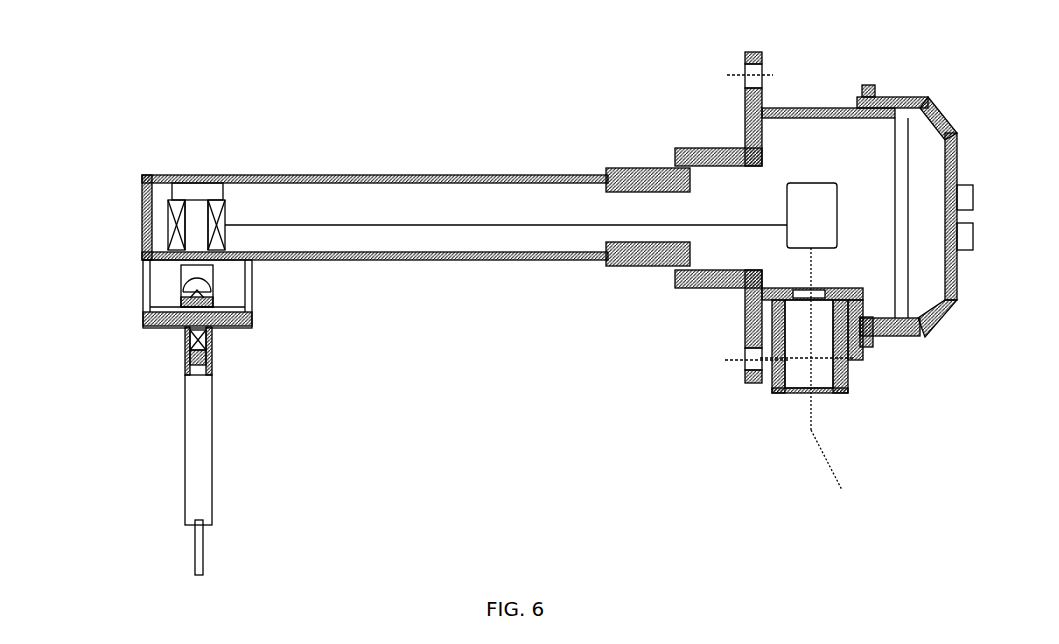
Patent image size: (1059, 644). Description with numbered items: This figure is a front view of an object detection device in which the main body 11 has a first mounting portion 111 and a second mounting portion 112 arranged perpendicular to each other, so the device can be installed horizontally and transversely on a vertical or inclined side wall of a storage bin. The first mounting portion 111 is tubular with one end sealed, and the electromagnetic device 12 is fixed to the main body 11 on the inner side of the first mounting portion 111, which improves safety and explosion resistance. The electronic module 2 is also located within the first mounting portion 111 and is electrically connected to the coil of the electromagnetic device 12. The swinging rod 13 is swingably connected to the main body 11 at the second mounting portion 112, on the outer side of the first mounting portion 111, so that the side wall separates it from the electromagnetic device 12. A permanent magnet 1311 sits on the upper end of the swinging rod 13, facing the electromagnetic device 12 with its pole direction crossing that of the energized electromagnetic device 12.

The main body 11 is at (366, 177).
The first mounting portion 111 is at (472, 203).
The second mounting portion 112 is at (158, 293).
The electromagnetic device 12 is at (203, 184).
The swinging rod 13 is at (214, 297).
The permanent magnet 1311 is at (208, 275).
The electronic module 2 is at (801, 190).